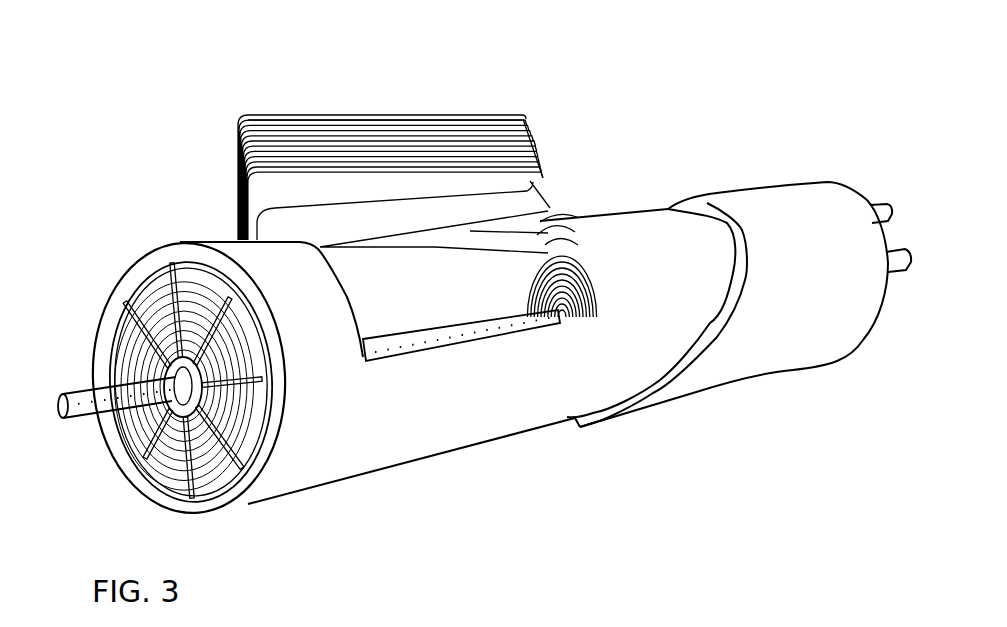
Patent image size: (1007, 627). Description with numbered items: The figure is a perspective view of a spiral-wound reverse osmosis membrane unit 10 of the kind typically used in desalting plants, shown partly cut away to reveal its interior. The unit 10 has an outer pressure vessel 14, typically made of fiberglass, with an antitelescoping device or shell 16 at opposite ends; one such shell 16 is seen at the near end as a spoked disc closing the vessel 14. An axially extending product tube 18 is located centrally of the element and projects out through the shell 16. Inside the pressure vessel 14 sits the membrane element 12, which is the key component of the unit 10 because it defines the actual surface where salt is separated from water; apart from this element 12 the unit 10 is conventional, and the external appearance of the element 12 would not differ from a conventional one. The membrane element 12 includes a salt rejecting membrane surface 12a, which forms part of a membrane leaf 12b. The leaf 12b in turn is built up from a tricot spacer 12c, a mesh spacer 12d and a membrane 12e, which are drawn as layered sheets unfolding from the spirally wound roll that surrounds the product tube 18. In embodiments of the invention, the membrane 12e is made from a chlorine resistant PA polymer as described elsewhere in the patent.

The spiral-wound RO membrane unit 10 is at (653, 110).
The membrane element 12 is at (470, 108).
The salt rejecting membrane surface 12a is at (473, 285).
The membrane leaf 12b is at (580, 231).
The tricot spacer 12c is at (457, 258).
The mesh spacer 12d is at (527, 190).
The membrane 12e is at (526, 143).
The outer pressure vessel 14 is at (677, 388).
The antitelescoping device or shell 16 is at (210, 503).
The product tube 18 is at (84, 415).